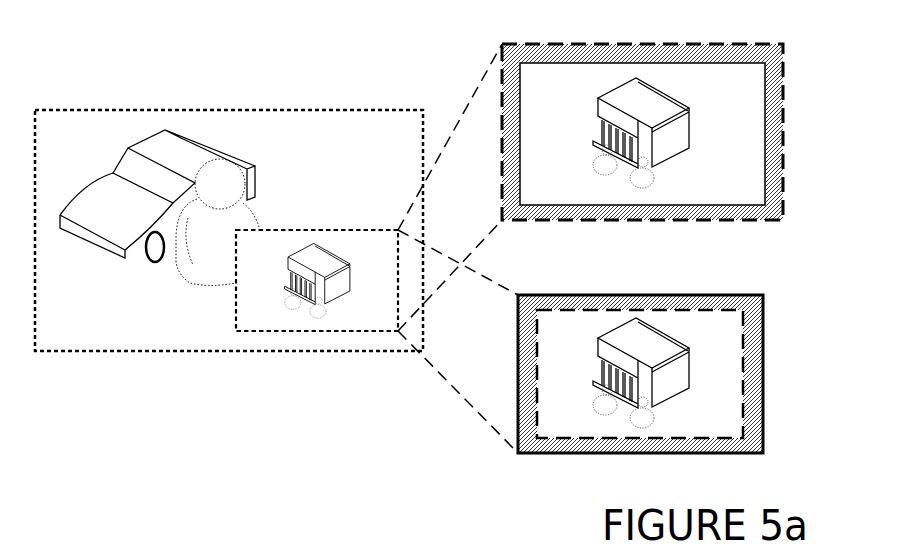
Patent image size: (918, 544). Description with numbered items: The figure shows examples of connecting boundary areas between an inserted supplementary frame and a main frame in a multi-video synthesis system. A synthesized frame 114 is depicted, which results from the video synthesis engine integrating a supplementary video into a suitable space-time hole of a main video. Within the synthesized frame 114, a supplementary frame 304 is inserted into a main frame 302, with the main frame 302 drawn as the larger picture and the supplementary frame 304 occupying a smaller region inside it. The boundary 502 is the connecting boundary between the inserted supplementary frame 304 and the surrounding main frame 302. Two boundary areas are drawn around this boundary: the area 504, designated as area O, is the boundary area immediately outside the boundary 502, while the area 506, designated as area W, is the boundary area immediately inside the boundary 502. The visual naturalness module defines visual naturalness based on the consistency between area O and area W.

The synthesized frame 114 is at (238, 83).
The main frame 302 is at (392, 108).
The supplementary frame 304 is at (313, 230).
The boundary 502 is at (742, 63).
The area O 504 is at (697, 52).
The area W 506 is at (688, 297).